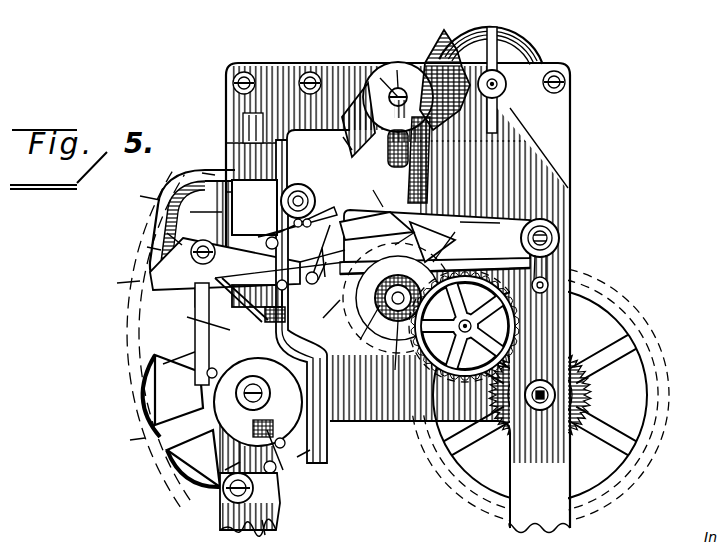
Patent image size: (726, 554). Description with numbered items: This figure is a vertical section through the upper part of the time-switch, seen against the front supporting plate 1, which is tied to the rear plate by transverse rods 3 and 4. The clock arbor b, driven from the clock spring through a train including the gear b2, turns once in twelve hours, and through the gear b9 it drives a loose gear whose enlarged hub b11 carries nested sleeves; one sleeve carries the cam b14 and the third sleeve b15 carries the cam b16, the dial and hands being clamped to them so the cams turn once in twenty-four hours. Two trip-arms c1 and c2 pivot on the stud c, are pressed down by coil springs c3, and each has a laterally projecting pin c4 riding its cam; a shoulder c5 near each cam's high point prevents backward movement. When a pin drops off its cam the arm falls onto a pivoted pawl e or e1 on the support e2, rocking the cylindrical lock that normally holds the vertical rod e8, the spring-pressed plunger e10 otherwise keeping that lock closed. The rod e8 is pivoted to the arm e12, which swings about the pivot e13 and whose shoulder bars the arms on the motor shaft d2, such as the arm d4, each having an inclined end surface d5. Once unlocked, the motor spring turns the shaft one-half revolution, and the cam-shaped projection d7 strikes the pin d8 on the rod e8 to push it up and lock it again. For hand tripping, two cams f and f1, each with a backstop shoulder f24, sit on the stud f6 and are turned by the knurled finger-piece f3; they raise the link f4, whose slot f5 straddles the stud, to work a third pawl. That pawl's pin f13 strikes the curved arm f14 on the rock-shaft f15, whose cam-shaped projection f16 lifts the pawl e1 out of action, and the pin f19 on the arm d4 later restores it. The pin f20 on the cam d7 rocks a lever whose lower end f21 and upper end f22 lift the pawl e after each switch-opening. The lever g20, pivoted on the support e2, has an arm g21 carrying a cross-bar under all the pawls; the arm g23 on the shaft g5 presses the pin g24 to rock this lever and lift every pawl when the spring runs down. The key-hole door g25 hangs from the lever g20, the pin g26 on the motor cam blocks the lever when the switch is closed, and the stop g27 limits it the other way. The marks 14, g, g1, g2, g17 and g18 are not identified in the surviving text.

The front supporting frame or plate 1 is at (557, 108).
The transverse rod 3 is at (560, 76).
The transverse rod 4 is at (234, 80).
The slide bar 14 is at (262, 520).
The shaft or arbor b is at (356, 6).
The gear b2 is at (667, 380).
The gear b9 is at (513, 330).
The enlarged hub b11 is at (420, 312).
The cam b14 is at (395, 243).
The third sleeve b15 is at (395, 370).
The cam b16 is at (421, 302).
The stud c is at (553, 232).
The trip-arm c1 is at (437, 236).
The trip-arm c2 is at (500, 223).
The coil springs c3 is at (547, 267).
The laterally projecting pin c4 is at (287, 252).
The shoulder c5 is at (411, 223).
The shaft d2 is at (200, 390).
The projecting arm d4 is at (240, 457).
The inclined surface d5 is at (210, 328).
The cam-shaped projection d7 is at (262, 450).
The pin d8 is at (323, 318).
The pivoted pawl e is at (325, 238).
The pivoted pawl e1 is at (338, 206).
The support e2 is at (288, 163).
The rod e8 is at (242, 126).
The plunger e10 is at (300, 262).
The arm e12 is at (290, 488).
The pivot e13 is at (236, 498).
The cam f is at (343, 117).
The cam f1 is at (444, 34).
The knurled finger-piece f3 is at (397, 70).
The link or rod f4 is at (410, 168).
The slotted opening f5 is at (410, 168).
The stud f6 is at (380, 78).
The pin f13 is at (380, 305).
The curved arm f14 is at (343, 137).
The rock-shaft f15 is at (345, 172).
The cam-shaped projection f16 is at (340, 186).
The pin f19 is at (297, 457).
The pin f20 is at (225, 470).
The lower end of pivoted lever f21 is at (187, 317).
The upper end of pivoted lever f22 is at (320, 279).
The shoulder f24 is at (470, 38).
The hook lever g is at (213, 170).
The arm g1 is at (140, 196).
The arm g2 is at (130, 440).
The shaft g5 is at (160, 265).
The arm g17 is at (167, 233).
The arm g18 is at (202, 173).
The lever g20 is at (163, 364).
The arm g21 is at (147, 247).
The arm g23 is at (193, 294).
The pin g24 is at (180, 284).
The door g25 is at (193, 212).
The projecting pin g26 is at (300, 314).
The stop g27 is at (117, 283).